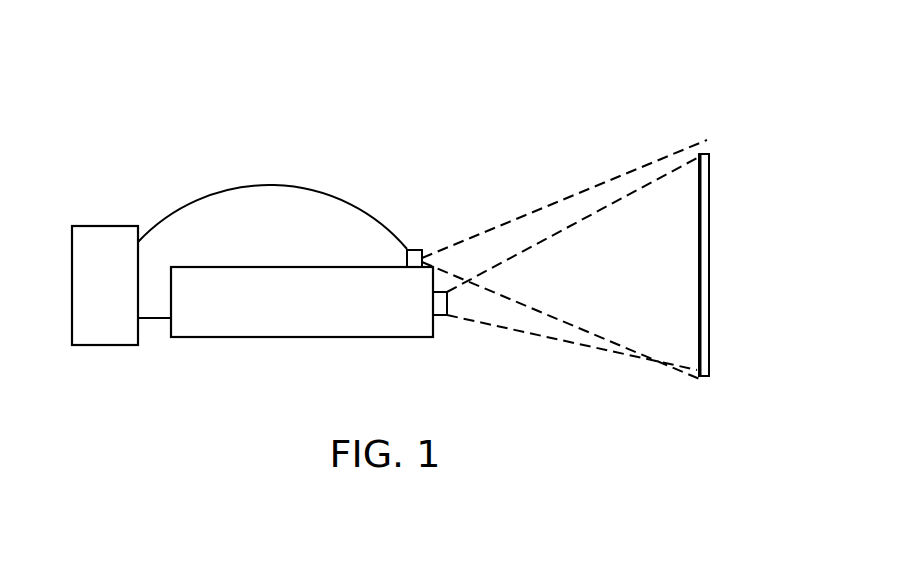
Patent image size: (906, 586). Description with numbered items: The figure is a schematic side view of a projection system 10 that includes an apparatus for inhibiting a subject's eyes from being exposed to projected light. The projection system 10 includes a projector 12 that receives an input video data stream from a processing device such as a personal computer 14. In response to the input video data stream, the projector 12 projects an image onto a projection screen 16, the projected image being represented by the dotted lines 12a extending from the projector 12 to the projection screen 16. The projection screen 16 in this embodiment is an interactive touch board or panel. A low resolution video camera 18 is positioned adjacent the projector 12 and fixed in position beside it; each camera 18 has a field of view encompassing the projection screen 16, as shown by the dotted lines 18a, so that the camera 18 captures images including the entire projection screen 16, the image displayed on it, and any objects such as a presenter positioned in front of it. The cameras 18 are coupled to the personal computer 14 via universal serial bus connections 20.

The projection system 10 is at (137, 159).
The projector 12 is at (402, 337).
The dotted lines 12a is at (550, 338).
The personal computer 14 is at (117, 333).
The projection screen 16 is at (709, 273).
The video camera 18 is at (418, 250).
The dotted lines 18a is at (578, 192).
The universal serial bus connection 20 is at (272, 185).